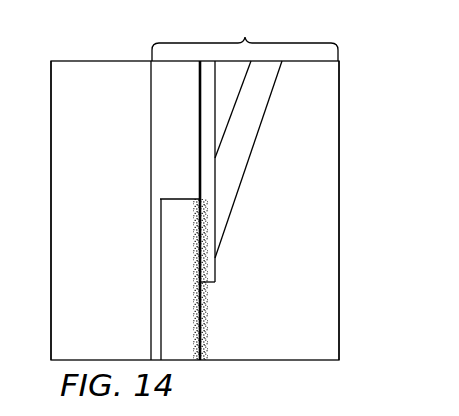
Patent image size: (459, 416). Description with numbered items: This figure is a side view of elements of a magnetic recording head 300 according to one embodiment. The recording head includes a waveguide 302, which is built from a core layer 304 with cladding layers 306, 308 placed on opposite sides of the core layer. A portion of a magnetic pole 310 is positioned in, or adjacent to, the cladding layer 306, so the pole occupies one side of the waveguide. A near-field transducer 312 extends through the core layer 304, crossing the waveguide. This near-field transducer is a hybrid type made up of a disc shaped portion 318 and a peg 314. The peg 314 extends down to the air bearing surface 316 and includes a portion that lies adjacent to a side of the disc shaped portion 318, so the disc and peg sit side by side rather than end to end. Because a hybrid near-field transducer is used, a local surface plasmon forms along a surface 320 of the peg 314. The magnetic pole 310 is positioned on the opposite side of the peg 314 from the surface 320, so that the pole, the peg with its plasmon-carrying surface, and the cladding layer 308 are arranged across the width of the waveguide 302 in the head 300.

The magnetic recording head 300 is at (328, 33).
The waveguide 302 is at (245, 146).
The core layer 304 is at (242, 158).
The cladding layer 306 is at (162, 91).
The cladding layer 308 is at (330, 237).
The magnetic pole 310 is at (67, 229).
The near-field transducer 312 is at (186, 190).
The peg 314 is at (190, 322).
The air bearing surface 316 is at (187, 362).
The disc shaped portion 318 is at (208, 200).
The surface of the peg 320 is at (207, 340).